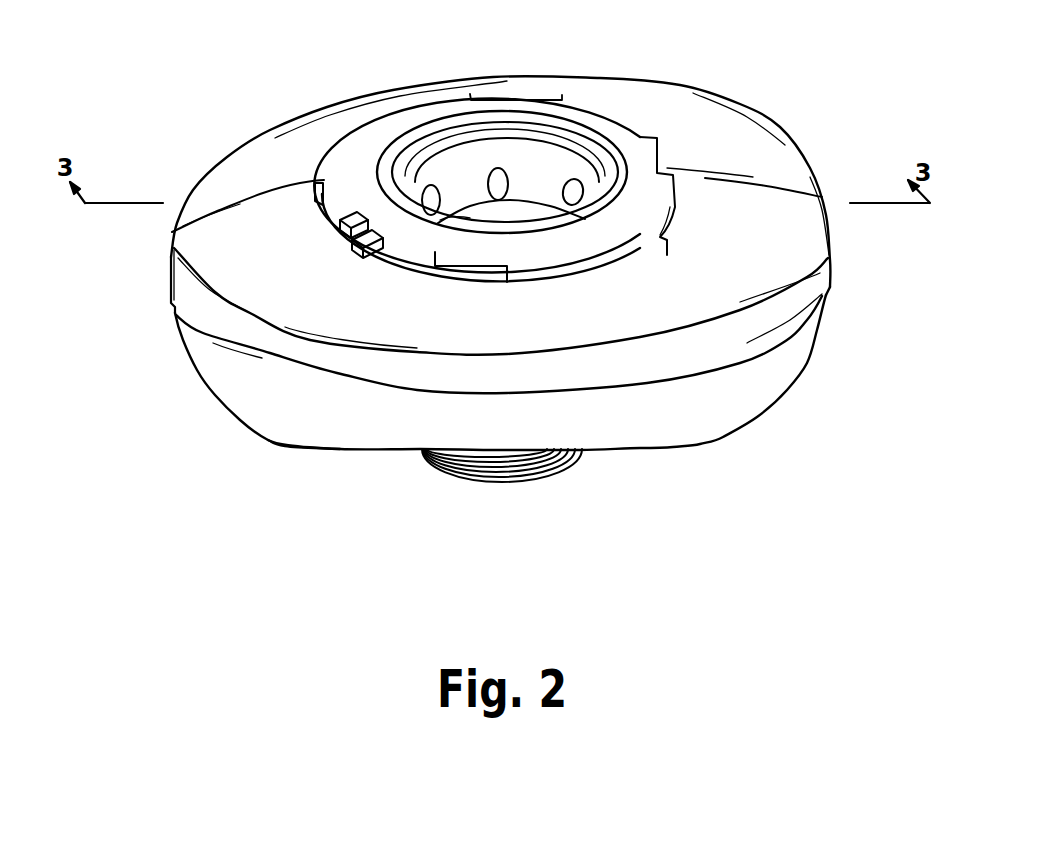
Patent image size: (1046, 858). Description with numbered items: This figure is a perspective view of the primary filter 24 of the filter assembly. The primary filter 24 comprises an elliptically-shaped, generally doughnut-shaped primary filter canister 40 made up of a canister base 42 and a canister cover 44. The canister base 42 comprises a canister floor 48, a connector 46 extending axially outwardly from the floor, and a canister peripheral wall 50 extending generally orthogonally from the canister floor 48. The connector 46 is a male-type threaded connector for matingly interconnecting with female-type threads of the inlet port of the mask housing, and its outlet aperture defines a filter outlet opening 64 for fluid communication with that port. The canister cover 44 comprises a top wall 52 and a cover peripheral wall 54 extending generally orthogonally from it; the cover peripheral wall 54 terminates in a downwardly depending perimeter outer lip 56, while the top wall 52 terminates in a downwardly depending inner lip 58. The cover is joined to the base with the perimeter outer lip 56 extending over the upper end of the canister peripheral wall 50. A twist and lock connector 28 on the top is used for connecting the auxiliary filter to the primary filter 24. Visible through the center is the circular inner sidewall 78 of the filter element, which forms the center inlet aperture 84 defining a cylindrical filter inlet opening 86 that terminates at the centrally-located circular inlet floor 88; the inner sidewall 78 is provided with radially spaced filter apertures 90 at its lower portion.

The primary filter 24 is at (757, 475).
The twist and lock connector 28 is at (363, 183).
The primary filter canister 40 is at (752, 110).
The canister base 42 is at (750, 378).
The canister cover 44 is at (673, 137).
The connector 46 is at (427, 455).
The canister floor 48 is at (275, 437).
The canister peripheral wall 50 is at (178, 283).
The top wall 52 is at (297, 167).
The cover peripheral wall 54 is at (813, 277).
The perimeter outer lip 56 is at (827, 293).
The inner lip 58 is at (537, 130).
The filter outlet opening 64 is at (460, 470).
The inner sidewall 78 is at (570, 150).
The center inlet aperture 84 is at (441, 182).
The filter inlet opening 86 is at (495, 160).
The inlet floor 88 is at (445, 219).
The filter apertures 90 is at (440, 177).